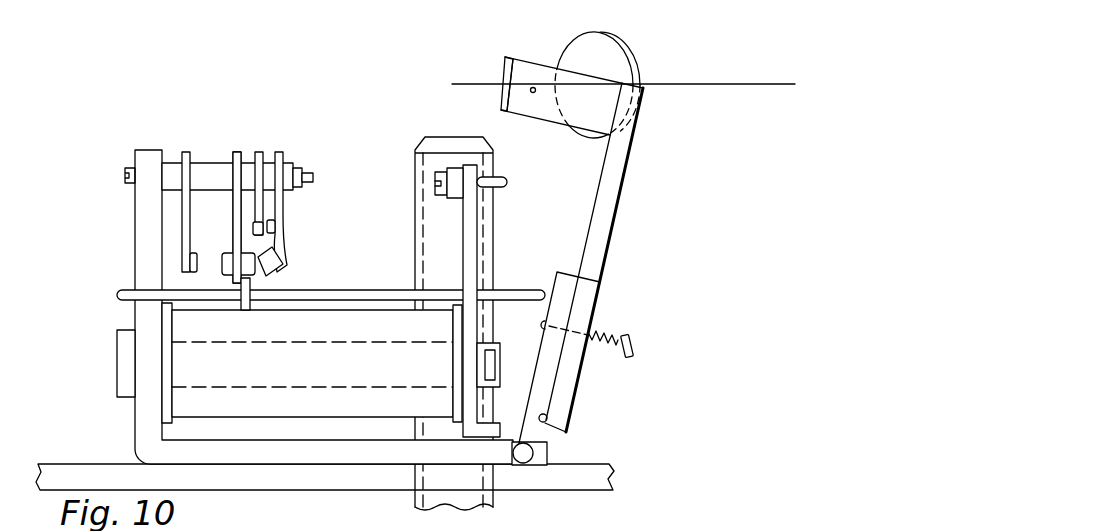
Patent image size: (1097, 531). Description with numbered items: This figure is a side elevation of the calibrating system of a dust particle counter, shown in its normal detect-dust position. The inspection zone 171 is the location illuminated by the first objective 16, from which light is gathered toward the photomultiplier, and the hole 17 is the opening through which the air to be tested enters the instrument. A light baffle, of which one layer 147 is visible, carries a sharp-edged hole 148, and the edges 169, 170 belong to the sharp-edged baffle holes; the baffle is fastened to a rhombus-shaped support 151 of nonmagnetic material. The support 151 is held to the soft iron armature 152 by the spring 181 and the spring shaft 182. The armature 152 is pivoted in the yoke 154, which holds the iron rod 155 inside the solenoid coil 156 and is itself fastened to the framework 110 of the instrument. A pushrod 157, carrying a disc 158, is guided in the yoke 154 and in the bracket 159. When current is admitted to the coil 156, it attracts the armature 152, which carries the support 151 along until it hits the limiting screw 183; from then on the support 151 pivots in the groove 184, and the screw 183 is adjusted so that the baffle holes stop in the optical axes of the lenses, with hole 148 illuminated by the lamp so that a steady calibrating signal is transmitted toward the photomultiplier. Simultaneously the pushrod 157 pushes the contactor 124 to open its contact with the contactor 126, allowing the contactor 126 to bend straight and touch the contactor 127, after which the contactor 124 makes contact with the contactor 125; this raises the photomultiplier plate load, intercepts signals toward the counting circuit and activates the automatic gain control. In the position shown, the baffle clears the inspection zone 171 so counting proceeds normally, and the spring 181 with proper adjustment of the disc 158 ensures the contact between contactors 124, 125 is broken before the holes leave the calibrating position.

The first objective 16 is at (632, 55).
The hole 17 is at (413, 173).
The framework 110 is at (596, 465).
The contactor 124 is at (236, 150).
The contactor 125 is at (185, 150).
The contactor 126 is at (280, 150).
The contactor 127 is at (258, 150).
The light baffle layer 147 is at (538, 58).
The hole 148 is at (534, 94).
The rhombus-shaped support 151 is at (603, 299).
The armature 152 is at (563, 271).
The yoke 154 is at (135, 415).
The iron rod 155 is at (117, 360).
The solenoid coil 156 is at (330, 310).
The pushrod 157 is at (380, 288).
The disc 158 is at (252, 287).
The bracket 159 is at (477, 255).
The sharp edge 169 is at (501, 78).
The sharp edge 170 is at (514, 57).
The inspection zone 171 is at (450, 82).
The spring 181 is at (612, 331).
The spring shaft 182 is at (636, 342).
The limiting screw 183 is at (497, 173).
The groove 184 is at (548, 419).